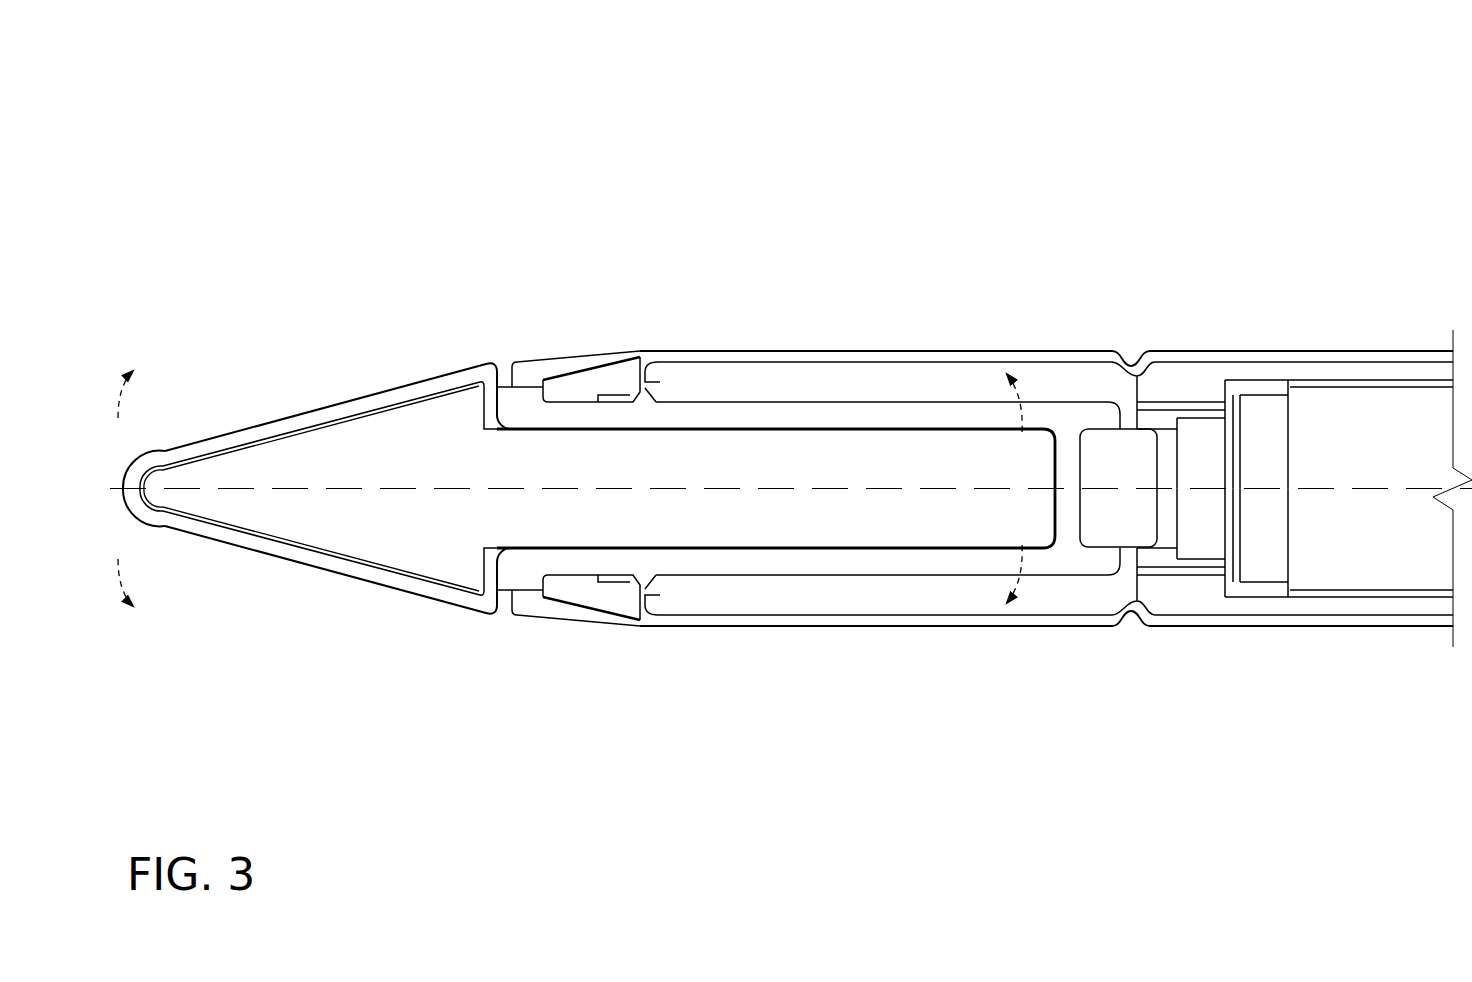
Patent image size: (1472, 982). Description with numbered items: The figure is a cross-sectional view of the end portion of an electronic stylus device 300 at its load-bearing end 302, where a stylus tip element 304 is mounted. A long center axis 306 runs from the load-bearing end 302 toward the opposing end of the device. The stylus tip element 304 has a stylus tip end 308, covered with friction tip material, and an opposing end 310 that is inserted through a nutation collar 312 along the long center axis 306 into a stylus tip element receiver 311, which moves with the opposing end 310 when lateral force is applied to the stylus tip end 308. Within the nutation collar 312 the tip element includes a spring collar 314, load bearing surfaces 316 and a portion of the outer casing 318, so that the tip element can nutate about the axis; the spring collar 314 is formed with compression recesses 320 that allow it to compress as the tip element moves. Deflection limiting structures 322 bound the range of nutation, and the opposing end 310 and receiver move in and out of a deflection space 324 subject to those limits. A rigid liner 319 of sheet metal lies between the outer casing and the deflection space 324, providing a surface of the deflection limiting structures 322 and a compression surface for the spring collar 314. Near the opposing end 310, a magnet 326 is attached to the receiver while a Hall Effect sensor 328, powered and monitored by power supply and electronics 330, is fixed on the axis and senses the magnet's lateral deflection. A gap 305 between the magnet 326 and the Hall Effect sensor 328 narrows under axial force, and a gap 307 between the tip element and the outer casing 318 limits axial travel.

The electronic stylus device 300 is at (301, 120).
The load-bearing end 302 is at (196, 672).
The stylus tip element 304 is at (360, 368).
The gap 305 is at (1163, 432).
The long center axis 306 is at (393, 490).
The gap 307 is at (503, 355).
The stylus tip end 308 is at (180, 400).
The opposing end 310 is at (1065, 592).
The stylus tip element receiver 311 is at (935, 418).
The nutation collar 312 is at (515, 313).
The spring collar 314 is at (588, 380).
The load bearing surfaces 316 is at (520, 387).
The outer casing 318 is at (603, 348).
The rigid liner 319 is at (960, 358).
The compression recesses 320 is at (620, 395).
The deflection limiting structures 322 is at (668, 383).
The deflection space 324 is at (815, 390).
The magnet 326 is at (1118, 528).
The Hall Effect sensor 328 is at (1205, 532).
The power supply and electronics 330 is at (1390, 550).